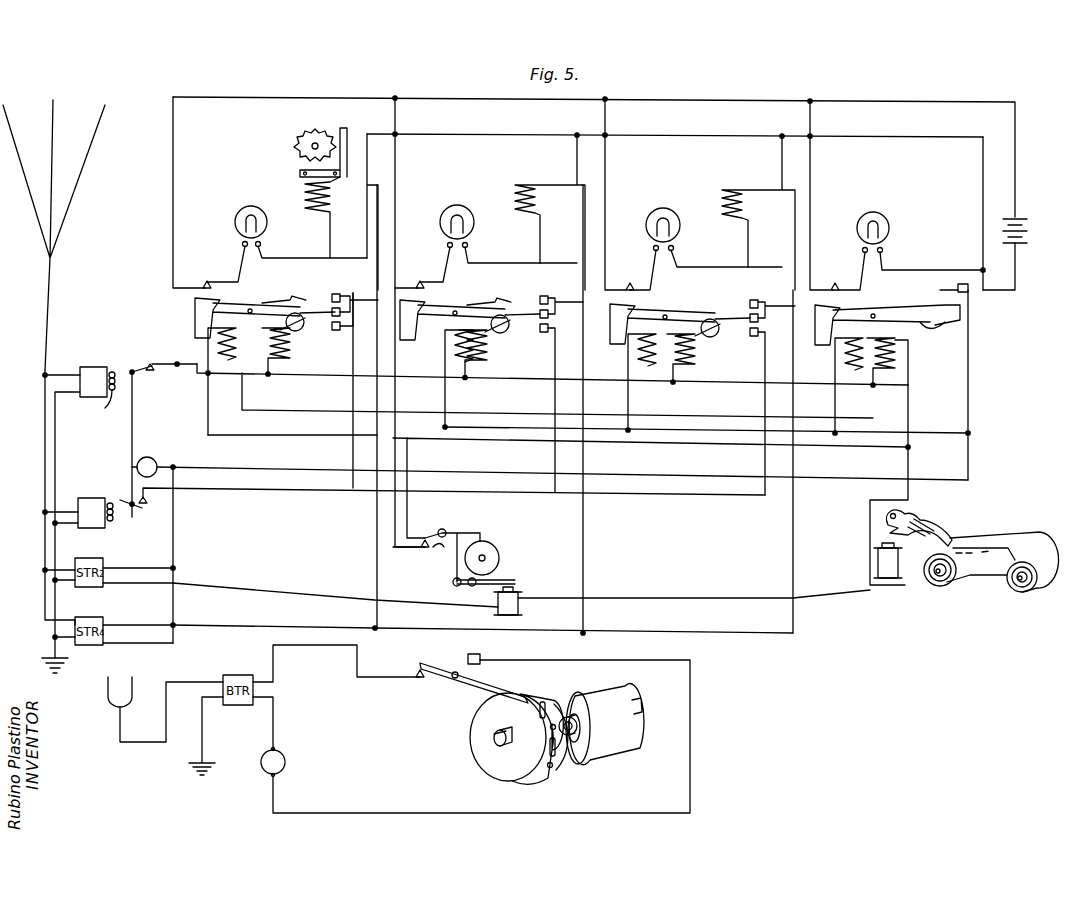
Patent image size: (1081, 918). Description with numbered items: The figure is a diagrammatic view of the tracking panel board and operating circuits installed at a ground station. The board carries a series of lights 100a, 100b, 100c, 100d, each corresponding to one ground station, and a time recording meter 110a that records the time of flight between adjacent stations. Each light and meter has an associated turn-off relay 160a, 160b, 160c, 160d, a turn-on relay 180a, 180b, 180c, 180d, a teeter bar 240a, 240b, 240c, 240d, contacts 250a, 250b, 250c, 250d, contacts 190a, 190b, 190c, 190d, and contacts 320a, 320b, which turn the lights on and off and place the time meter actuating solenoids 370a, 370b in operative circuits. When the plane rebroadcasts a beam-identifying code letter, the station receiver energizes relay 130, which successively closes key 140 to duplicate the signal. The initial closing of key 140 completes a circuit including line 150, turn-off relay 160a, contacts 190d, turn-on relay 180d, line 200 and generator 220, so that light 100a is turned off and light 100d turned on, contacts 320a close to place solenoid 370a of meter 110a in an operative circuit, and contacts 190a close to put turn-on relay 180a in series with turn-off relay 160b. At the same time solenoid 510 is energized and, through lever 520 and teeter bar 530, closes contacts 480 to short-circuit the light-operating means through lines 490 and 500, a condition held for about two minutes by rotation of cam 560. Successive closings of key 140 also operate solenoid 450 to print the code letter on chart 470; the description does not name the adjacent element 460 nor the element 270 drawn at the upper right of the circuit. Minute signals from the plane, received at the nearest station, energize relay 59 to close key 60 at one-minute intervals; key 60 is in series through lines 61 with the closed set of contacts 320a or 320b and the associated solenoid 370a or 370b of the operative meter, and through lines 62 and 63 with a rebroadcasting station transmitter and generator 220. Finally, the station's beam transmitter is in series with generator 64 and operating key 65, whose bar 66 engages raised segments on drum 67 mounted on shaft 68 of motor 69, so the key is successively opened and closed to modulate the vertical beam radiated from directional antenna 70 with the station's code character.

The time recording meter 110a is at (291, 141).
The light 100a is at (245, 208).
The light 100b is at (454, 206).
The light 100c is at (661, 208).
The light 100d is at (870, 212).
The time meter actuating solenoid 370a is at (304, 216).
The time meter actuating solenoid 370b is at (512, 208).
The contacts 250a is at (203, 285).
The contacts 250b is at (416, 285).
The contacts 250c is at (626, 287).
The contacts 250d is at (831, 287).
The teeter bar 240a is at (195, 318).
The teeter bar 240b is at (455, 318).
The teeter bar 240c is at (680, 316).
The teeter bar 240d is at (950, 320).
The contacts 320a is at (296, 298).
The contacts 320b is at (501, 300).
The contacts 190a is at (365, 302).
The contacts 190b is at (570, 304).
The contacts 190c is at (778, 308).
The contacts 190d is at (935, 295).
The turn-off relay 160a is at (210, 342).
The turn-off relay 160b is at (447, 346).
The turn-off relay 160c is at (630, 350).
The turn-off relay 160d is at (838, 358).
The turn-on relay 180a is at (282, 352).
The turn-on relay 180b is at (496, 354).
The turn-on relay 180c is at (702, 356).
The turn-on relay 180d is at (897, 354).
The battery 270 is at (1024, 242).
The line 200 is at (968, 384).
The lines 61 is at (350, 392).
The lines 62 is at (350, 538).
The lines 63 is at (173, 545).
The line 490 is at (244, 445).
The line 500 is at (440, 438).
The relay 130 is at (79, 512).
The key 140 is at (142, 378).
The line 150 is at (192, 382).
The generator 220 is at (152, 460).
The key 60 is at (152, 498).
The relay 59 is at (81, 519).
The directional antenna 70 is at (132, 683).
The generator 64 is at (285, 760).
The operating key 65 is at (414, 673).
The bar 66 is at (508, 680).
The drum 67 is at (519, 738).
The shaft 68 is at (568, 740).
The motor 69 is at (612, 696).
The contacts 480 is at (426, 552).
The teeter bar 530 is at (448, 530).
The cam 560 is at (494, 545).
The lever 520 is at (512, 578).
The solenoid 510 is at (515, 603).
The solenoid 450 is at (876, 562).
The pawl 460 is at (905, 514).
The chart 470 is at (996, 538).